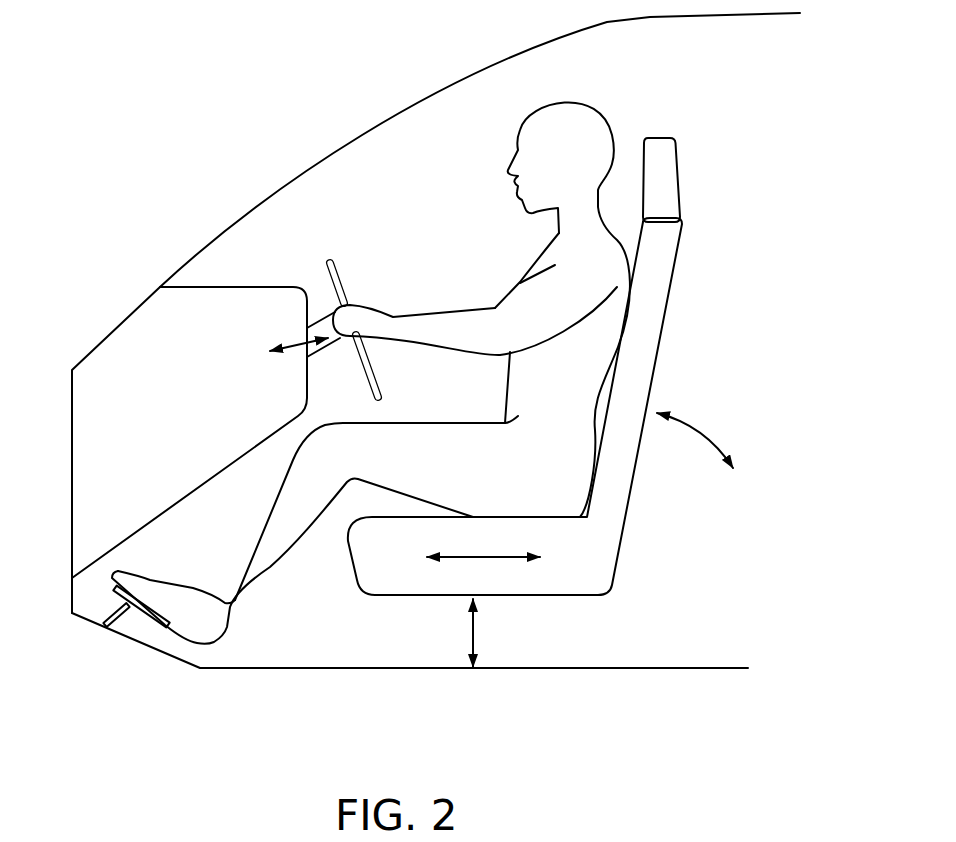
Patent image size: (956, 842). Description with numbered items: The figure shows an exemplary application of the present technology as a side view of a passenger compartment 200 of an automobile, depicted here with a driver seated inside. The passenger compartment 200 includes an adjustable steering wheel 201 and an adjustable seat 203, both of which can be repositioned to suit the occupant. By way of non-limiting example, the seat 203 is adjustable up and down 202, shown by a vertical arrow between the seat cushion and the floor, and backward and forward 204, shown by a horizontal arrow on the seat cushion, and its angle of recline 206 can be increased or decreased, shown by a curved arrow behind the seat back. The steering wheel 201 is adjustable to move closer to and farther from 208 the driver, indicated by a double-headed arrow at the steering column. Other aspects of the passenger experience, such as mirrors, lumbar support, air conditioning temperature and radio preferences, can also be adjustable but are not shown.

The passenger compartment 200 is at (758, 75).
The adjustable steering wheel 201 is at (343, 287).
The up and down adjustment 202 is at (467, 640).
The adjustable seat 203 is at (660, 243).
The backward and forward adjustment 204 is at (500, 557).
The angle of recline adjustment 206 is at (697, 423).
The closer to and farther from adjustment 208 is at (296, 357).